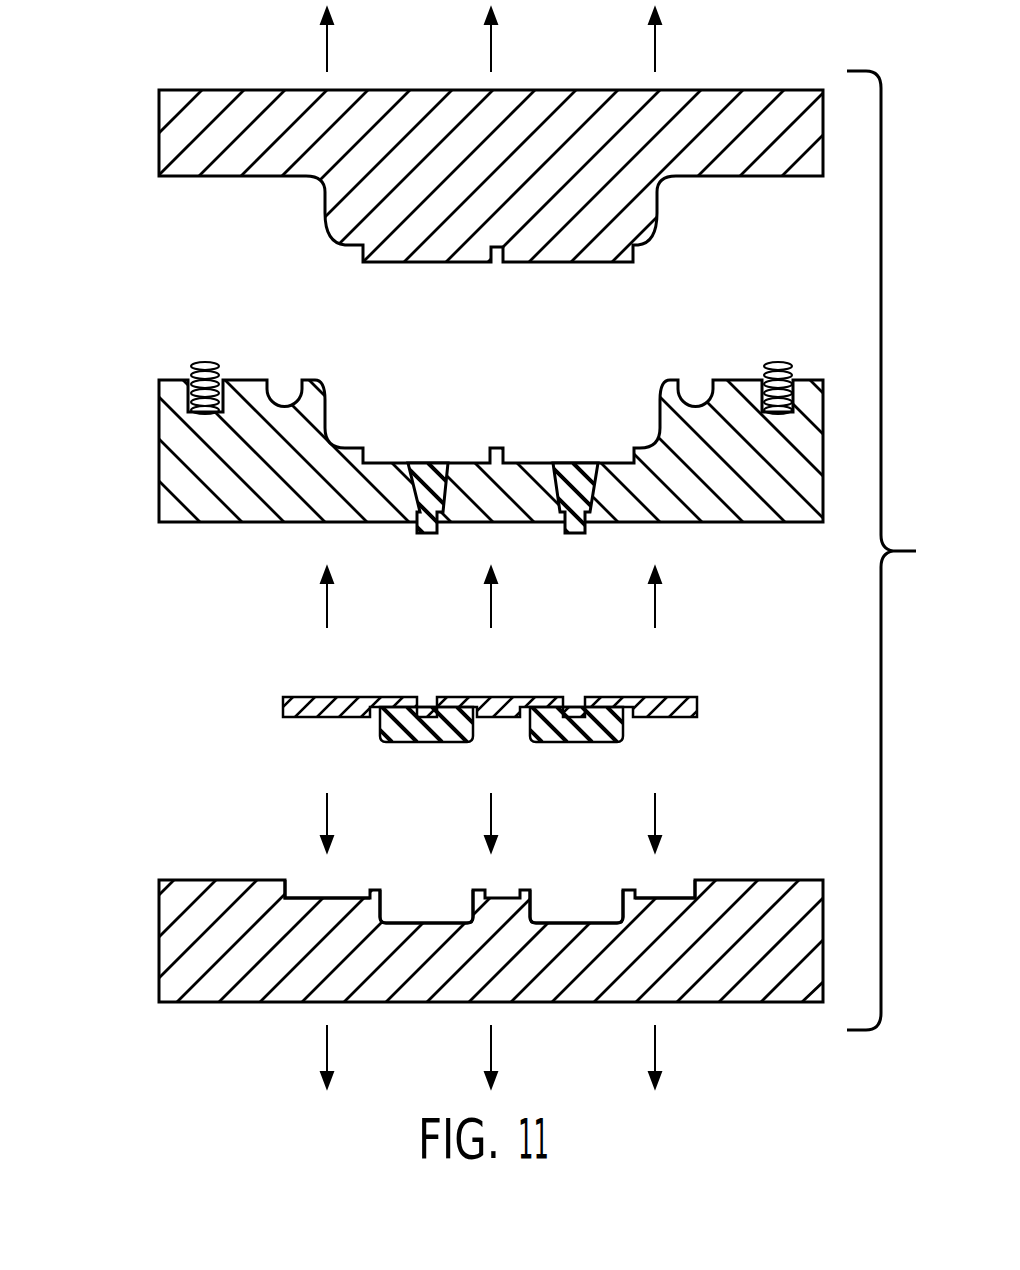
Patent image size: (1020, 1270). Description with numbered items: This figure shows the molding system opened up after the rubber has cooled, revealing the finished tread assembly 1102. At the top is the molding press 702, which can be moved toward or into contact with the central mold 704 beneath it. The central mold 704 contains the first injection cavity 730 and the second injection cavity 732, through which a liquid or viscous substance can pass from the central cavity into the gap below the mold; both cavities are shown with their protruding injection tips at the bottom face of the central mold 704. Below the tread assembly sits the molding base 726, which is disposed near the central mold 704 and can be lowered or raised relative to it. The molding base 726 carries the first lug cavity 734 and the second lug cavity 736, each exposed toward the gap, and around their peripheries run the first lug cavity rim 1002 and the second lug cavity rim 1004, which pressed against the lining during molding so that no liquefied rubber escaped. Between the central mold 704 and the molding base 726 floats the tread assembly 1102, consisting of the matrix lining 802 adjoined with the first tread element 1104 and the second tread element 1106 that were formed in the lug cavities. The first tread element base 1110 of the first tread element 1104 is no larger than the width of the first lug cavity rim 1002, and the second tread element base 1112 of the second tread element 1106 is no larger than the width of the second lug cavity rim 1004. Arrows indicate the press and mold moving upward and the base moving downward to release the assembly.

The molding press 702 is at (158, 108).
The central mold 704 is at (158, 437).
The molding base 726 is at (158, 934).
The first injection cavity 730 is at (570, 472).
The second injection cavity 732 is at (435, 470).
The first lug cavity 734 is at (570, 900).
The second lug cavity 736 is at (417, 902).
The matrix lining 802 is at (465, 697).
The first lug cavity rim 1002 is at (628, 892).
The second lug cavity rim 1004 is at (375, 892).
The tread assembly 1102 is at (549, 711).
The first tread element 1104 is at (597, 743).
The second tread element 1106 is at (422, 743).
The first tread element base 1110 is at (700, 703).
The second tread element base 1112 is at (377, 718).